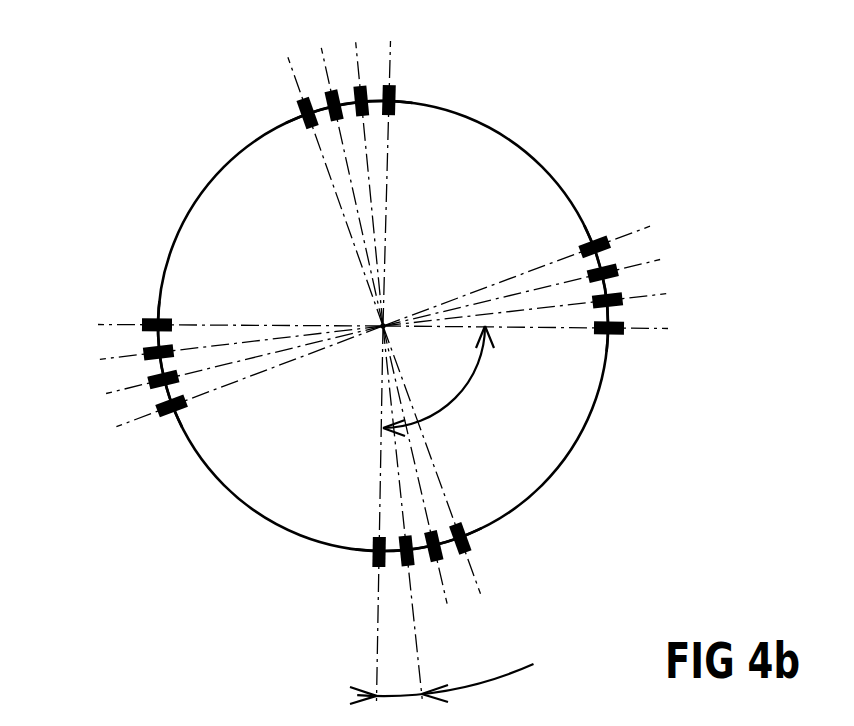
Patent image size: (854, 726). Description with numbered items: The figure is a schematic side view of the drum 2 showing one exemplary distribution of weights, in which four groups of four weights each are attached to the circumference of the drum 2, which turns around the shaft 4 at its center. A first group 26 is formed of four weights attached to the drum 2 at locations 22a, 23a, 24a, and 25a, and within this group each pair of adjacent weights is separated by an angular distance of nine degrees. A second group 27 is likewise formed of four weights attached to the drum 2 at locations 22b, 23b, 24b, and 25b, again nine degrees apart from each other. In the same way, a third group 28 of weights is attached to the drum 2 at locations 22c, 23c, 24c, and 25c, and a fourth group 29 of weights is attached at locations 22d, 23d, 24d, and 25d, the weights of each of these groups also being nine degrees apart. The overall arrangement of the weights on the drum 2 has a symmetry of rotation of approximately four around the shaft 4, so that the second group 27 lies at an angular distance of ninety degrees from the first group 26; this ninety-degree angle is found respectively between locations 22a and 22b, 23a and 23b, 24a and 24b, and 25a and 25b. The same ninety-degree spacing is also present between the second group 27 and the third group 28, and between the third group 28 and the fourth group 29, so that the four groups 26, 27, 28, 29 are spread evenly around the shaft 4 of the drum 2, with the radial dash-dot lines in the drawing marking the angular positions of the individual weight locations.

The drum 2 is at (272, 433).
The shaft 4 is at (383, 326).
The first group 26 is at (488, 504).
The second group 27 is at (575, 233).
The third group 28 is at (410, 127).
The fourth group 29 is at (182, 308).
The location 22a is at (377, 562).
The location 23a is at (403, 562).
The location 24a is at (436, 560).
The location 25a is at (466, 548).
The location 22b is at (613, 335).
The location 23b is at (620, 303).
The location 24b is at (614, 273).
The location 25b is at (605, 243).
The location 22c is at (395, 92).
The location 23c is at (367, 90).
The location 24c is at (330, 97).
The location 25c is at (300, 105).
The location 22d is at (157, 318).
The location 23d is at (145, 353).
The location 24d is at (153, 385).
The location 25d is at (164, 412).